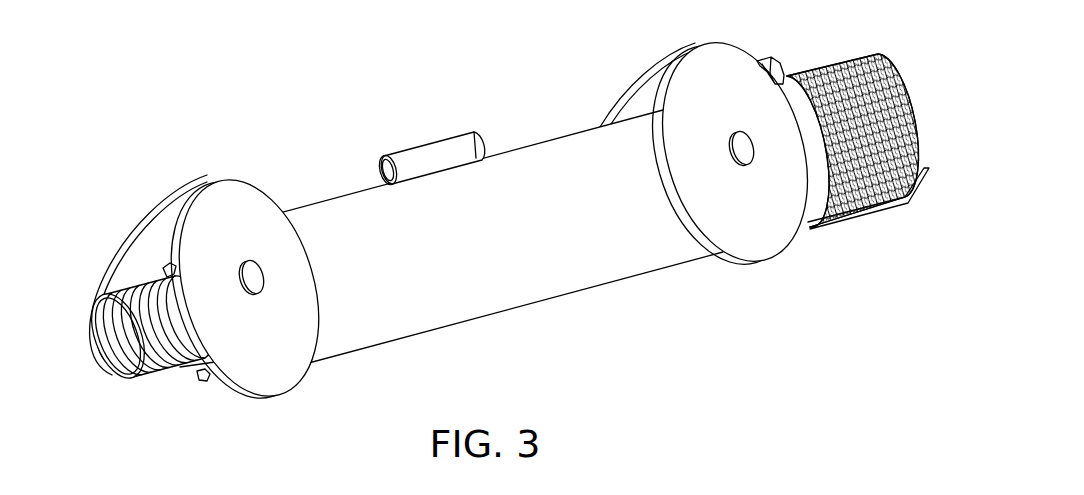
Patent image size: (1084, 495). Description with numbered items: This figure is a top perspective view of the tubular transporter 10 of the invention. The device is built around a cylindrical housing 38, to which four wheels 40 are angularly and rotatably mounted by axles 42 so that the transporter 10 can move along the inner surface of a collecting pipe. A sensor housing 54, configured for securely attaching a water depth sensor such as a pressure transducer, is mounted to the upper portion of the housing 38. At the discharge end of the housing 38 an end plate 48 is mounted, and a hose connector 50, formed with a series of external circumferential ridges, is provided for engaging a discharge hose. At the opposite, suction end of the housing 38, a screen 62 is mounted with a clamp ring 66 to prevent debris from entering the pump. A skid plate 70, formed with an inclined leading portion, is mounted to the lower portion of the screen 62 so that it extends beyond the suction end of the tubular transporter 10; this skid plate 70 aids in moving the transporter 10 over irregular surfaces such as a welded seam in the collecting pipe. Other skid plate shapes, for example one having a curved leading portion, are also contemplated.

The tubular transporter 10 is at (350, 163).
The cylindrical housing 38 is at (572, 147).
The wheels 40 is at (762, 242).
The axles 42 is at (738, 153).
The end plate 48 is at (217, 373).
The hose connector 50 is at (115, 287).
The sensor housing 54 is at (445, 142).
The screen 62 is at (813, 70).
The clamp ring 66 is at (810, 212).
The skid plate 70 is at (927, 177).